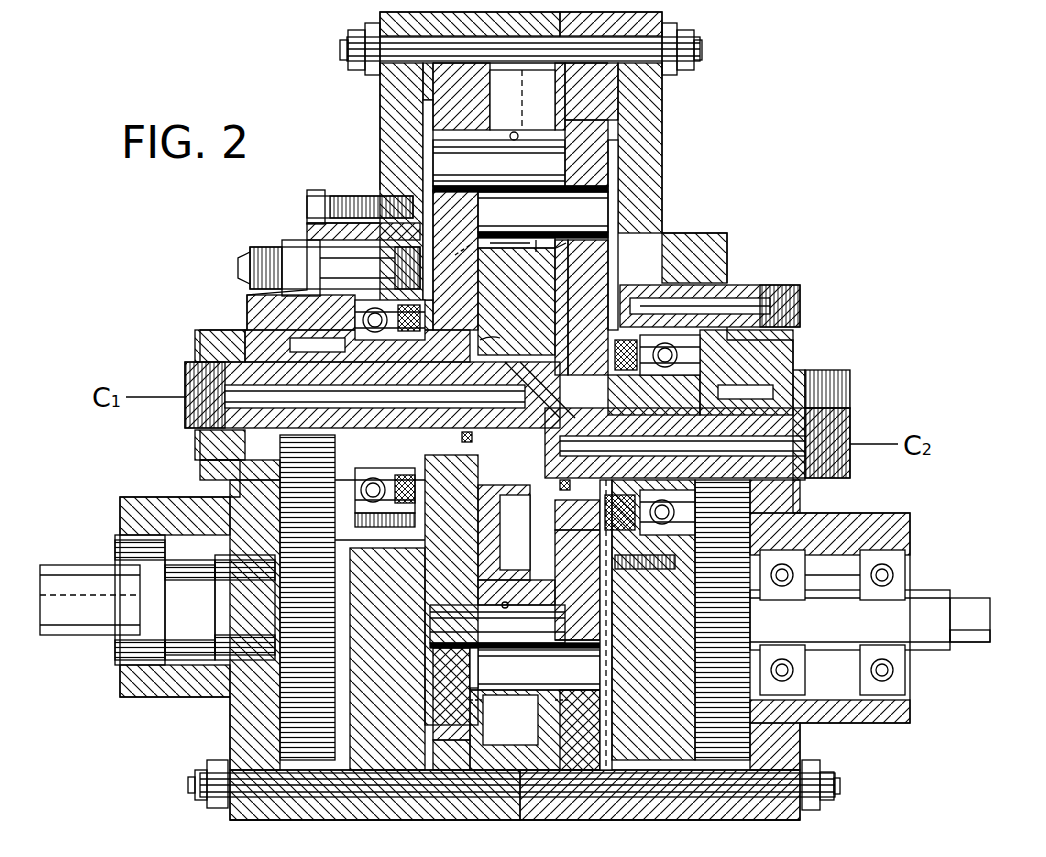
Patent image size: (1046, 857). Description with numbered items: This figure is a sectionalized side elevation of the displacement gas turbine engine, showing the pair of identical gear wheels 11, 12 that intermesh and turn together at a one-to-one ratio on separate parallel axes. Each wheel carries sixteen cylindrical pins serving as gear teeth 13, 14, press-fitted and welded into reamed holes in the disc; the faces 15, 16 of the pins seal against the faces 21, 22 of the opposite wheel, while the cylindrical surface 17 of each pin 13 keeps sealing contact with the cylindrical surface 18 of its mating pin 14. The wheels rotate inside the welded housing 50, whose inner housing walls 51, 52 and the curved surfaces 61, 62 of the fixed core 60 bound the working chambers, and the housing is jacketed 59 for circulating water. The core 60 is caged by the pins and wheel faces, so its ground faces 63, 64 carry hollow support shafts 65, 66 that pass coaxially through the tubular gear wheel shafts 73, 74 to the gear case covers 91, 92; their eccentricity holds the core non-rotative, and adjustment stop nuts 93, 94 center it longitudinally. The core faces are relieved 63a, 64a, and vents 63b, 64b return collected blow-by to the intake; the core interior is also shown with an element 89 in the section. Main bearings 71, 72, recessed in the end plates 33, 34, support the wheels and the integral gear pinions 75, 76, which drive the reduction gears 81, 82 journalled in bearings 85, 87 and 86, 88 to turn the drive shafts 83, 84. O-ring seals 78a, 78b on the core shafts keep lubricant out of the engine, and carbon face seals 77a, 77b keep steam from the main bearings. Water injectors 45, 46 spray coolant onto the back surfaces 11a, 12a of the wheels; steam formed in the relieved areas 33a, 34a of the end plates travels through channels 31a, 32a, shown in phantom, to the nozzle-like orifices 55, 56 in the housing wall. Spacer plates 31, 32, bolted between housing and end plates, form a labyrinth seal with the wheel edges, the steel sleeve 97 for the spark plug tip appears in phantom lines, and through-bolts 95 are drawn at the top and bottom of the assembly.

The gear wheel 11 is at (435, 572).
The back surface of gear wheel 11a is at (425, 585).
The gear wheel 12 is at (569, 341).
The back surface of gear wheel 12a is at (613, 163).
The gear teeth (cylindrical pins) 13 is at (483, 169).
The gear teeth (cylindrical pins) 14 is at (523, 217).
The pin face 15 is at (568, 170).
The pin face 16 is at (472, 208).
The cylindrical surface of pin 17 is at (556, 636).
The cylindrical surface of pin 18 is at (476, 662).
The face of gear wheel 21 is at (510, 244).
The face of gear wheel 22 is at (553, 589).
The spacer plate 31 is at (449, 32).
The steam channel 31a is at (450, 725).
The spacer plate 32 is at (577, 98).
The steam channel 32a is at (580, 730).
The end plate 33 is at (380, 118).
The relieved area of end plate 33a is at (425, 170).
The end plate 34 is at (662, 158).
The relieved area of end plate 34a is at (610, 634).
The water injector 45 is at (250, 258).
The water injector 46 is at (790, 290).
The housing 50 is at (482, 815).
The inner housing wall 51 is at (515, 132).
The inner housing wall 52 is at (510, 720).
The steam orifice 55 is at (476, 700).
The steam orifice 56 is at (570, 706).
The water jacket 59 is at (488, 109).
The core 60 is at (507, 311).
The curved surface of core 61 is at (540, 243).
The curved surface of core 62 is at (516, 592).
The core face 63 is at (476, 240).
The relief in core face 63a is at (478, 530).
The vent in core face 63b is at (452, 261).
The core face 64 is at (560, 592).
The relief in core face 64a is at (560, 290).
The vent in core face 64b is at (563, 245).
The core support shaft 65 is at (334, 424).
The core support shaft 66 is at (669, 471).
The main bearing 71 is at (370, 468).
The main bearing 72 is at (665, 497).
The tubular gear wheel shaft 73 is at (399, 354).
The tubular gear wheel shaft 74 is at (609, 394).
The gear pinion 75 is at (305, 342).
The gear pinion 76 is at (738, 388).
The carbon face seal 77a is at (420, 318).
The carbon face seal 77b is at (605, 525).
The O-ring seal 78a is at (473, 438).
The O-ring seal 78b is at (560, 482).
The reduction gear 81 is at (330, 640).
The reduction gear 82 is at (695, 650).
The drive shaft 83 is at (78, 632).
The drive shaft 84 is at (930, 598).
The reduction gear bearing 85 is at (232, 599).
The reduction gear bearing 86 is at (805, 580).
The reduction gear bearing 87 is at (126, 599).
The reduction gear bearing 88 is at (862, 660).
The seal 89 is at (490, 334).
The gear case cover 91 is at (230, 737).
The gear case cover 92 is at (793, 352).
The adjustment stop nut 93 is at (197, 346).
The adjustment stop nut 94 is at (835, 486).
The bolt 95 is at (345, 43).
The steel sleeve 97 is at (509, 94).